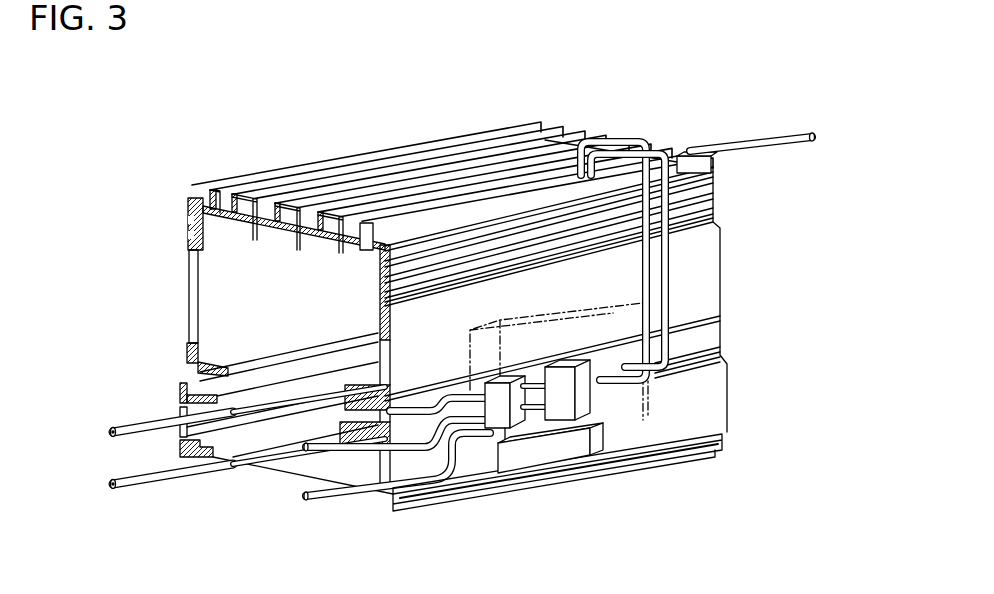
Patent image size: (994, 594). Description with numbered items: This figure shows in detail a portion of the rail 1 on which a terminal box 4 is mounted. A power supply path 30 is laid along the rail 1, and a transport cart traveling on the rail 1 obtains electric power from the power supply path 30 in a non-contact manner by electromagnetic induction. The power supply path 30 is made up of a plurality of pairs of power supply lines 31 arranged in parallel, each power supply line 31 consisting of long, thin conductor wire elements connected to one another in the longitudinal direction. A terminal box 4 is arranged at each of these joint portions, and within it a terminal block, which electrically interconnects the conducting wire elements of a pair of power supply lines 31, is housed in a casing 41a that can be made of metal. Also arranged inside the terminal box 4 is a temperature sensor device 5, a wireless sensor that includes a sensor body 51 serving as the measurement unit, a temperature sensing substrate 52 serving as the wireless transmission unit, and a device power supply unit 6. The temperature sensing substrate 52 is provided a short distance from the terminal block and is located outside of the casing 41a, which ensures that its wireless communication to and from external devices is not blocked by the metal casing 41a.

The rail 1 is at (201, 203).
The terminal box 4 is at (643, 420).
The casing 41a is at (647, 415).
The temperature sensor device 5 is at (465, 475).
The device power supply unit 6 is at (492, 376).
The power supply path 30 is at (691, 149).
The power supply line 31 is at (748, 149).
The sensor body 51 is at (545, 367).
The temperature sensing substrate 52 is at (527, 460).